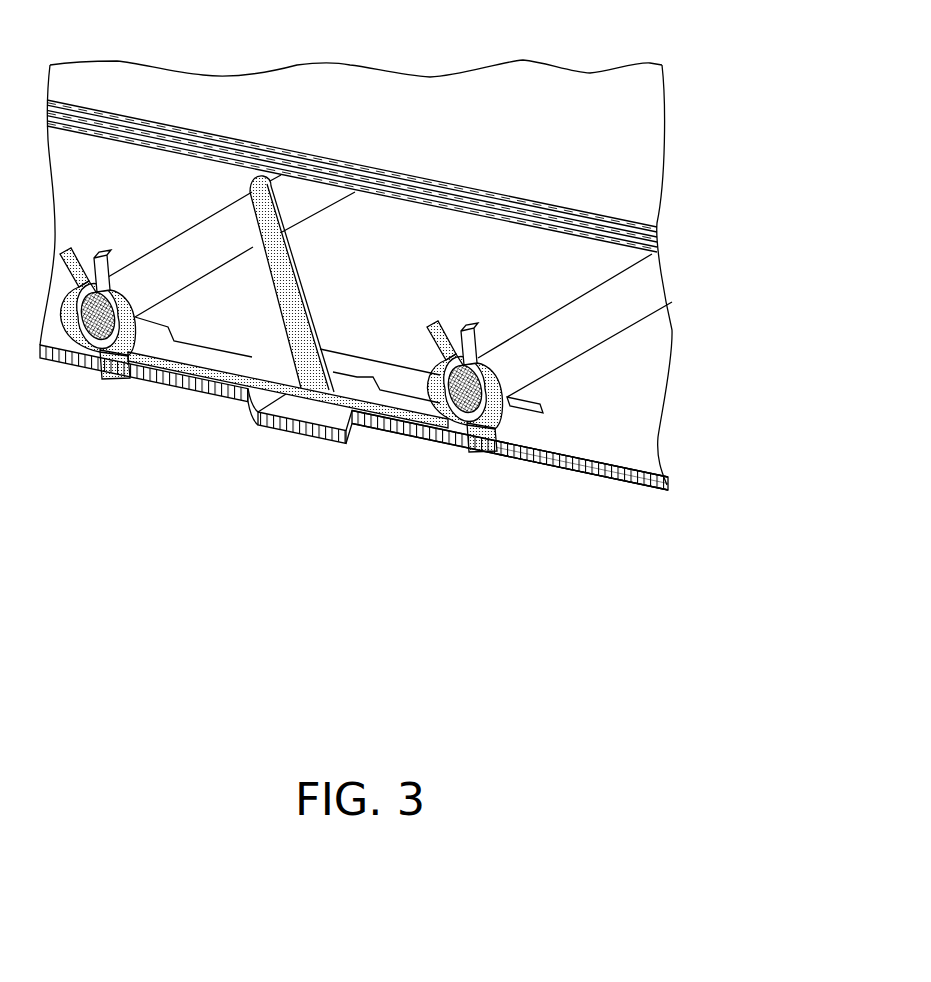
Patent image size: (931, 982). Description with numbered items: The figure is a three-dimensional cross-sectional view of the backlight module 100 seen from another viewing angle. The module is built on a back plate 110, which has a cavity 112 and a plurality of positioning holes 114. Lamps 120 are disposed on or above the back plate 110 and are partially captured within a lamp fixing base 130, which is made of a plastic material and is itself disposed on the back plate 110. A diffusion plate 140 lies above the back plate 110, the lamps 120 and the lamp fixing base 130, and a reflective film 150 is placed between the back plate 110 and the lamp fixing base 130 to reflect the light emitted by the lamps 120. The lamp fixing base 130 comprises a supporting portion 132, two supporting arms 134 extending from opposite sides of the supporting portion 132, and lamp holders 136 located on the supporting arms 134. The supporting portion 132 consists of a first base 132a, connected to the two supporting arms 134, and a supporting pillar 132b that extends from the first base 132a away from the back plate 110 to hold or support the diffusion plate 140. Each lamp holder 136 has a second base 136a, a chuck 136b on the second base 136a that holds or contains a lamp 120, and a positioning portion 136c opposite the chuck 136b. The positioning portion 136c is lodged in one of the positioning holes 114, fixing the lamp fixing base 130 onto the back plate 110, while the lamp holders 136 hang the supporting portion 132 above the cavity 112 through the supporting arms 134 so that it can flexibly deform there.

The backlight module 100 is at (764, 619).
The back plate 110 is at (457, 440).
The cavity 112 is at (348, 423).
The positioning holes 114 is at (453, 328).
The lamps 120 is at (642, 290).
The lamp fixing base 130 is at (369, 278).
The supporting portion 132 is at (288, 415).
The first base 132a is at (350, 378).
The supporting pillar 132b is at (293, 320).
The supporting arms 134 is at (188, 370).
The lamp holders 136 is at (575, 446).
The second base 136a is at (545, 437).
The chuck 136b is at (585, 386).
The positioning portion 136c is at (540, 471).
The diffusion plate 140 is at (625, 162).
The reflective film 150 is at (645, 353).